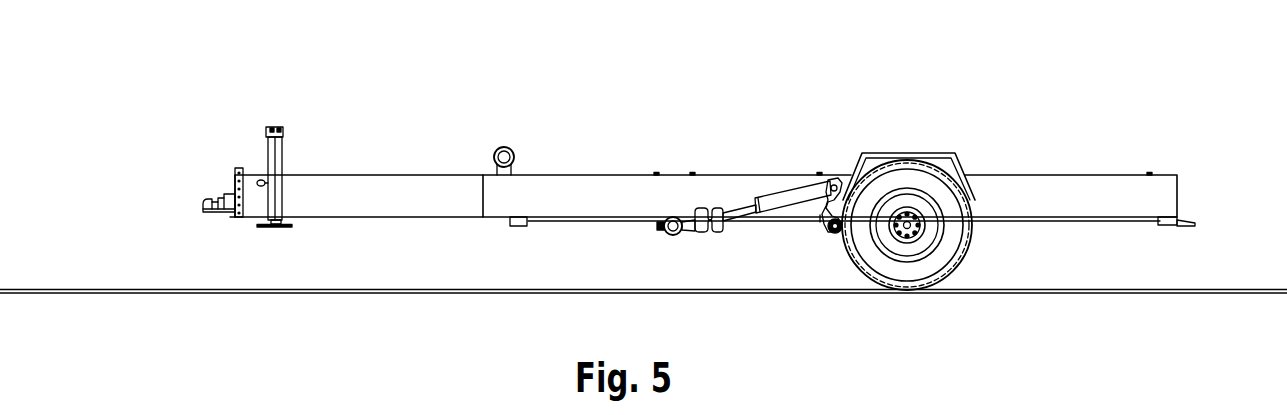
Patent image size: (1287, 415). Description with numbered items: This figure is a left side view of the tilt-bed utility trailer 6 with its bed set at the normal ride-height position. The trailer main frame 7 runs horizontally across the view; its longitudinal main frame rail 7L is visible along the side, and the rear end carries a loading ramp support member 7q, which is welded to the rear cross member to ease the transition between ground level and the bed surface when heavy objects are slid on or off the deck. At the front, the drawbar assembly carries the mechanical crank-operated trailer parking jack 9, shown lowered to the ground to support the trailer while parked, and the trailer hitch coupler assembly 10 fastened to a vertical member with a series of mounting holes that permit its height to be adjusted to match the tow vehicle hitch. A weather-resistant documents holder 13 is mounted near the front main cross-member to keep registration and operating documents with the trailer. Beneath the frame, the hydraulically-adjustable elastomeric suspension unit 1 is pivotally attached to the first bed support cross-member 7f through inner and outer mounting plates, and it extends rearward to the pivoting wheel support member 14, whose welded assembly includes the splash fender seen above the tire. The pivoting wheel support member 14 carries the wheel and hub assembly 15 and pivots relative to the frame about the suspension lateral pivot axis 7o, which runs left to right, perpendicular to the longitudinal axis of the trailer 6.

The tilt-bed utility trailer 6 is at (1149, 27).
The hydraulically-adjustable elastomeric suspension unit 1 is at (830, 174).
The trailer main frame 7 is at (417, 166).
The main frame rail 7L is at (852, 170).
The loading ramp support member 7q is at (1217, 199).
The first bed support cross-member 7f is at (661, 243).
The suspension lateral pivot axis 7o is at (782, 253).
The trailer parking jack 9 is at (303, 148).
The trailer hitch coupler assembly 10 is at (187, 222).
The documents holder 13 is at (531, 131).
The pivoting wheel support member 14 is at (931, 143).
The wheel and hub assembly 15 is at (940, 252).